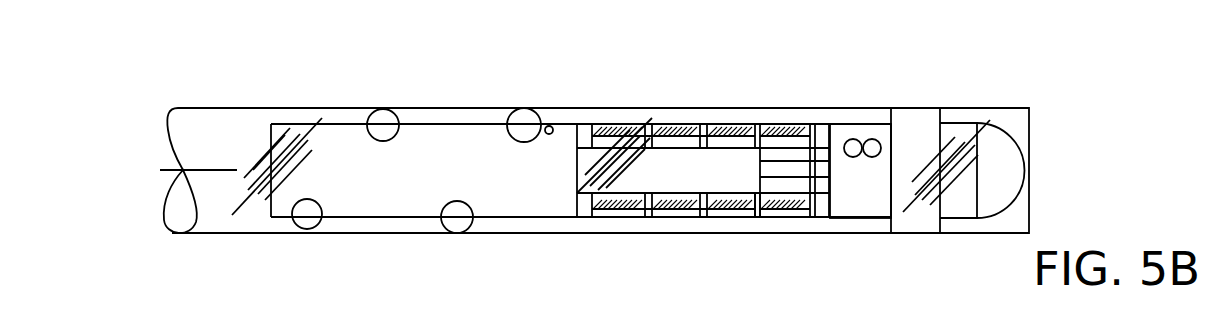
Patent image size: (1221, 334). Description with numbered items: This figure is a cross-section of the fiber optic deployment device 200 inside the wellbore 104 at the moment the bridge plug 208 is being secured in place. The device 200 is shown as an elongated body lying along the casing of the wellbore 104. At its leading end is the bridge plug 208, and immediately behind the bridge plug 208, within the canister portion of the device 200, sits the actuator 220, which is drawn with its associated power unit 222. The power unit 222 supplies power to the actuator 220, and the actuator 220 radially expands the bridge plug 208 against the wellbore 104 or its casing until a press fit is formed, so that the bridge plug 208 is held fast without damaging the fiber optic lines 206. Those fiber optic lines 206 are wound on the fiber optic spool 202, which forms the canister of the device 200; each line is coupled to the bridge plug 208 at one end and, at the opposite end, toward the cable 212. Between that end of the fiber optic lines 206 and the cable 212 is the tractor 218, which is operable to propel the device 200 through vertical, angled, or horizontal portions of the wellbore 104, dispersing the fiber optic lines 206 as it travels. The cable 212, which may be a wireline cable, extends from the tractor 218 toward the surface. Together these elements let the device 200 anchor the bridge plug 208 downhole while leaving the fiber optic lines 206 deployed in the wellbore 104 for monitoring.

The wellbore 104 is at (670, 108).
The fiber optic deployment device 200 is at (717, 162).
The fiber optic spool 202 is at (688, 213).
The fiber optic lines 206 is at (845, 146).
The bridge plug 208 is at (920, 108).
The cable 212 is at (237, 168).
The tractor 218 is at (506, 112).
The actuator 220 is at (797, 178).
The power unit 222 is at (747, 197).